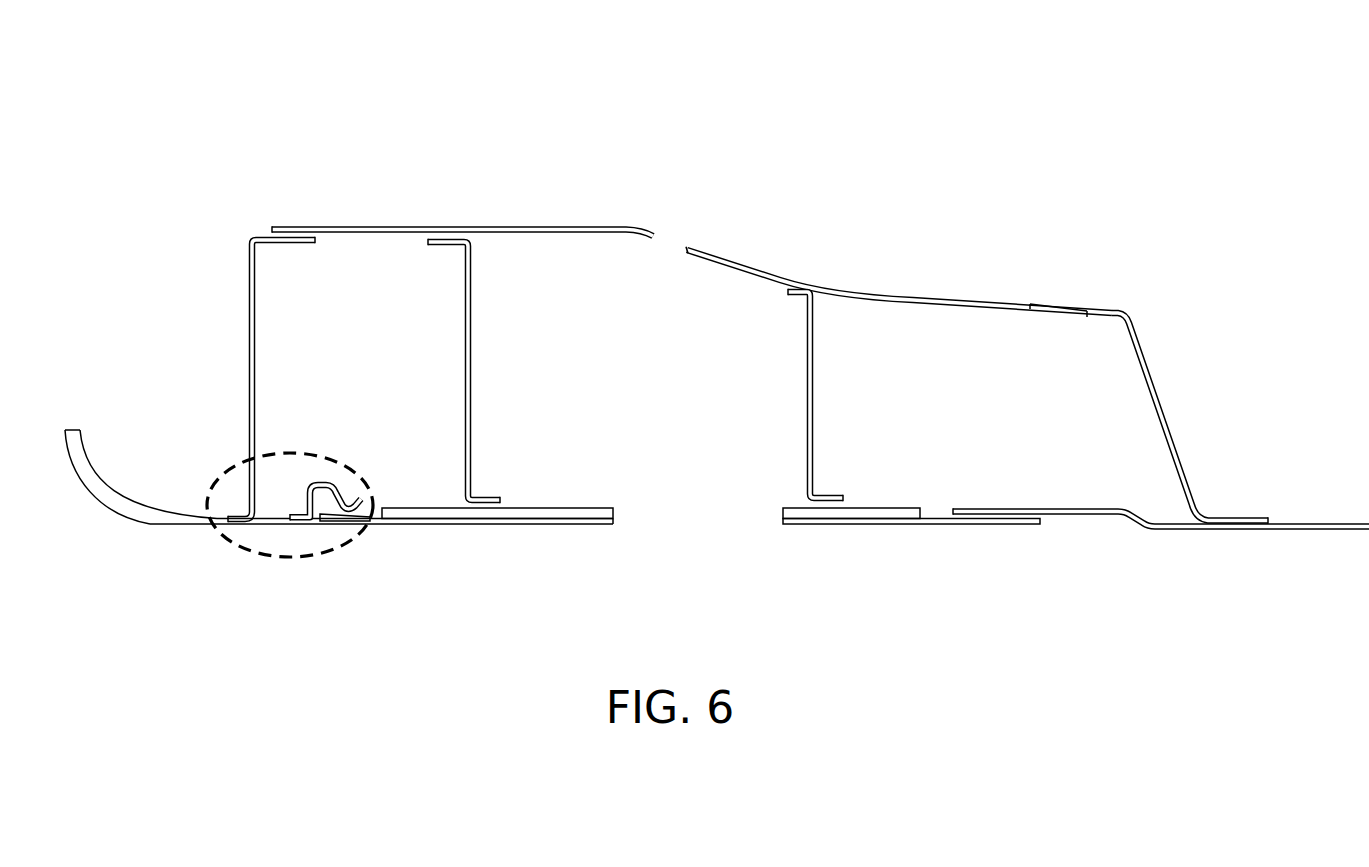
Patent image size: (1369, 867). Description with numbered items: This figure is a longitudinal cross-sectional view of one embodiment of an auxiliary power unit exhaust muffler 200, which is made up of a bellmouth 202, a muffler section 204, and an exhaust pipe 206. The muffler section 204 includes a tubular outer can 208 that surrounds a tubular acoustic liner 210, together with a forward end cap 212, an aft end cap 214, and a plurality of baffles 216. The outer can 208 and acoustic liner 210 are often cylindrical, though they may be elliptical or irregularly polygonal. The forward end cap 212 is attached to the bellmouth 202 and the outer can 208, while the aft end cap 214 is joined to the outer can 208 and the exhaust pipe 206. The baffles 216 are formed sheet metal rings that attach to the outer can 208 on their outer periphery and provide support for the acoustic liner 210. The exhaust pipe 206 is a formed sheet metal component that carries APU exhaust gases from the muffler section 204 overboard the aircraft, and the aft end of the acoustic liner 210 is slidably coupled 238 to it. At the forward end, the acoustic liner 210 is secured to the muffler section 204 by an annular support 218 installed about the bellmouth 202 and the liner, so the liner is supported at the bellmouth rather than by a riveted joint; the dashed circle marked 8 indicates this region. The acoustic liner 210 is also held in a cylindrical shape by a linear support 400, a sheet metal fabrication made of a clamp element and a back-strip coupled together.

The auxiliary power unit exhaust muffler 200 is at (788, 162).
The bellmouth 202 is at (92, 515).
The muffler section 204 is at (723, 528).
The exhaust pipe 206 is at (1320, 522).
The tubular outer can 208 is at (358, 233).
The tubular acoustic liner 210 is at (425, 527).
The forward end cap 212 is at (248, 330).
The aft end cap 214 is at (1160, 397).
The baffles 216 is at (473, 370).
The annular support 218 is at (323, 482).
The slidable coupling 238 is at (992, 500).
The linear support 400 is at (557, 508).
The detail region of FIG. 8 is at (307, 559).